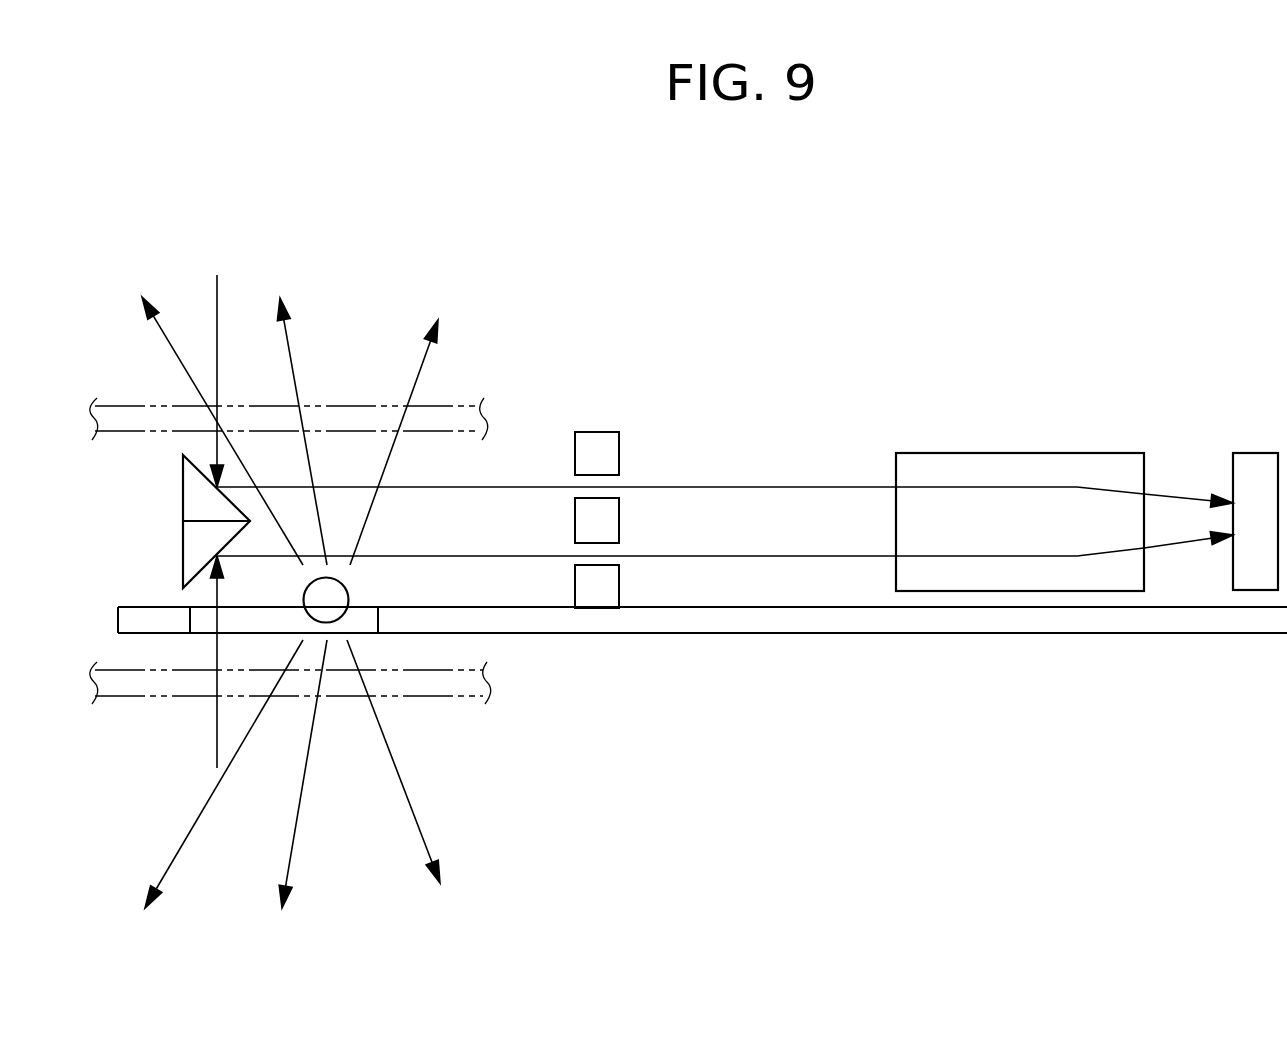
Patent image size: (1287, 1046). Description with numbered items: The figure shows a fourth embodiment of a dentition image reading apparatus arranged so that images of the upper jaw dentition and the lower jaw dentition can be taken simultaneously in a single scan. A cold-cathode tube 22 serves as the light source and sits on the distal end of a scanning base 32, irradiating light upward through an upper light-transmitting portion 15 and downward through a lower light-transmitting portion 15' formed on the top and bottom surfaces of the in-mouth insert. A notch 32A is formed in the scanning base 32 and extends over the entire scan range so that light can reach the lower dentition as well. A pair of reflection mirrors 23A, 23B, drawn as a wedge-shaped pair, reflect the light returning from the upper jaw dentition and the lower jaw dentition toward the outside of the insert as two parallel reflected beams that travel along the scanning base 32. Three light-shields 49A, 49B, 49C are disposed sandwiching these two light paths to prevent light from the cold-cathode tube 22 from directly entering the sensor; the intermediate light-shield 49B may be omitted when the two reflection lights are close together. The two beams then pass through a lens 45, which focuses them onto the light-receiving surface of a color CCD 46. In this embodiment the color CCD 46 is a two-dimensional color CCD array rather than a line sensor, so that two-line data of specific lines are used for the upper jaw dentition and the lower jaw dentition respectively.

The light-transmitting portion 15 is at (289, 383).
The lower side member 15' is at (290, 718).
The cold-cathode tube 22 is at (349, 592).
The reflection mirror 23A is at (192, 490).
The reflection mirror 23B is at (192, 556).
The scanning base 32 is at (870, 624).
The notch 32A is at (365, 629).
The lens 45 is at (1022, 453).
The color CCD 46 is at (1262, 453).
The light-shield 49A is at (619, 453).
The light-shield 49B is at (619, 520).
The light-shield 49C is at (619, 586).